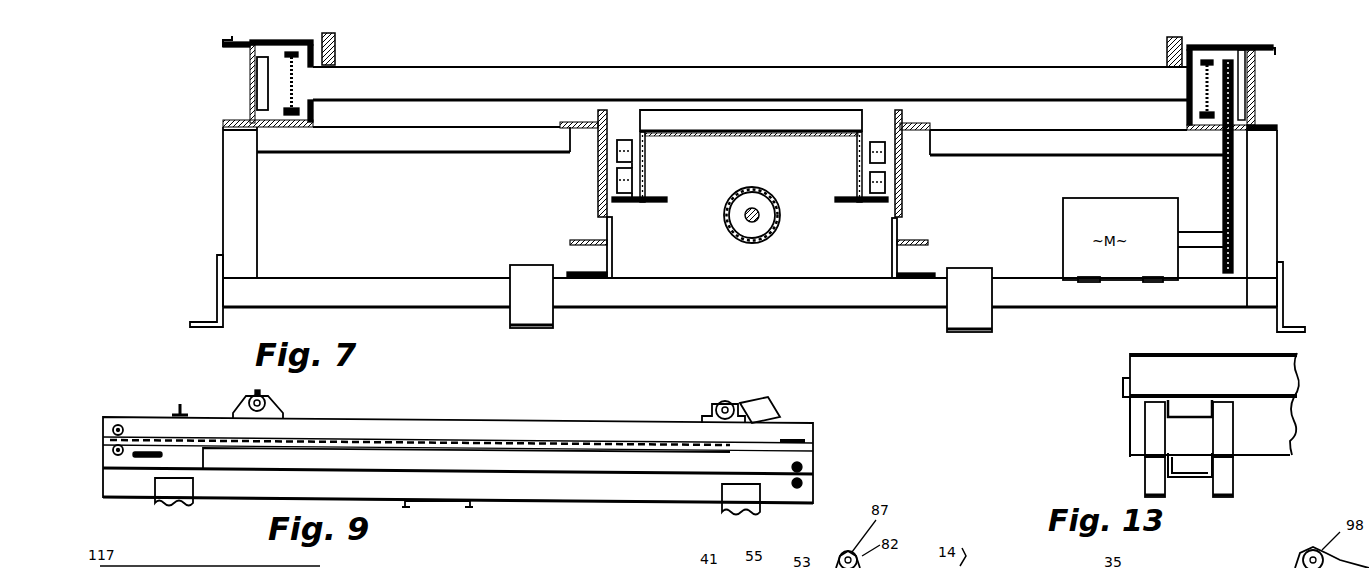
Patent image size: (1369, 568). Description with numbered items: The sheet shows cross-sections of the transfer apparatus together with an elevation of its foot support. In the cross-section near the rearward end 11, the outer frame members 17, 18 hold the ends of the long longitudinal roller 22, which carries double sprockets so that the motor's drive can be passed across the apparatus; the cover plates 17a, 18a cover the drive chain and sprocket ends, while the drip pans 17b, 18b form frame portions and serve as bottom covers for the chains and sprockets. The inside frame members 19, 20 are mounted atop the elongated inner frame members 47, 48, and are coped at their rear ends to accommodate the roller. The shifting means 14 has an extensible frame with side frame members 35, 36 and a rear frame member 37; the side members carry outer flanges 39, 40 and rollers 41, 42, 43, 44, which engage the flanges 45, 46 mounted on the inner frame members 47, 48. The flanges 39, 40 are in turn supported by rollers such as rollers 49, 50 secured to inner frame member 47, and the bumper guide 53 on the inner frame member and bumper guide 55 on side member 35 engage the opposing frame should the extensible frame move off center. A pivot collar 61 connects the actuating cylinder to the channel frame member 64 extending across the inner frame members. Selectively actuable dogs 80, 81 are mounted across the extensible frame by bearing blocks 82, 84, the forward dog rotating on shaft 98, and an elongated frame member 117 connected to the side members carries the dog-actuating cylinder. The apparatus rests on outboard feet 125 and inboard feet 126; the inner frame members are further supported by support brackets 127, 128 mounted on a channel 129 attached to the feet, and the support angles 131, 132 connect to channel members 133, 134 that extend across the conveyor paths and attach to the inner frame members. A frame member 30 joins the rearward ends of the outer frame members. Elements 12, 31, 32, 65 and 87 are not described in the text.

In FIG. 13, the rearward end 11 is at (1137, 354).
In FIG. 9, the carriage 12 is at (820, 420).
In FIG. 7, the shifting means 14 is at (707, 265).
In FIG. 7, the outer frame member 17 is at (250, 96).
In FIG. 13, the outer frame member 17 is at (1214, 375).
In FIG. 7, the cover plate 17a is at (223, 40).
In FIG. 7, the drip pan 17b is at (290, 127).
In FIG. 7, the outer frame member 18 is at (1256, 100).
In FIG. 7, the cover plate 18a is at (1275, 48).
In FIG. 7, the drip pan 18b is at (1200, 132).
In FIG. 7, the inside frame member 19 is at (603, 110).
In FIG. 7, the inside frame member 20 is at (899, 110).
In FIG. 7, the longitudinal roller 22 is at (750, 83).
In FIG. 13, the frame member 30 is at (1122, 389).
In FIG. 7, the left stop post 31 is at (335, 44).
In FIG. 7, the right stop post 32 is at (1167, 47).
In FIG. 7, the side frame member 35 is at (650, 200).
In FIG. 9, the side frame member 35 is at (450, 437).
In FIG. 7, the side frame member 36 is at (840, 137).
In FIG. 7, the rear frame member 37 is at (745, 118).
In FIG. 7, the outer flange 39 is at (630, 204).
In FIG. 9, the outer flange 39 is at (533, 464).
In FIG. 7, the outer flange 40 is at (880, 206).
In FIG. 7, the roller 41 is at (629, 140).
In FIG. 9, the roller 41 is at (136, 407).
In FIG. 7, the roller 42 is at (617, 183).
In FIG. 9, the roller 42 is at (113, 451).
In FIG. 7, the roller 43 is at (876, 142).
In FIG. 7, the roller 44 is at (885, 187).
In FIG. 7, the flange 45 is at (645, 162).
In FIG. 9, the flange 45 is at (494, 443).
In FIG. 7, the flange 46 is at (868, 172).
In FIG. 7, the inner frame member 47 is at (572, 228).
In FIG. 13, the inner frame member 47 is at (1291, 440).
In FIG. 7, the inner frame member 48 is at (900, 228).
In FIG. 9, the inner frame member 48 is at (487, 494).
In FIG. 9, the roller 49 is at (806, 464).
In FIG. 9, the roller 50 is at (812, 485).
In FIG. 9, the bumper guide 53 is at (814, 436).
In FIG. 9, the bumper guide 55 is at (140, 458).
In FIG. 7, the pivot collar 61 is at (770, 236).
In FIG. 9, the channel frame member 64 is at (442, 500).
In FIG. 7, the wheel hub 65 is at (760, 215).
In FIG. 9, the forward dog 80 is at (705, 398).
In FIG. 9, the rear dog 81 is at (262, 387).
In FIG. 9, the bearing block 82 is at (273, 414).
In FIG. 9, the bearing block 84 is at (745, 403).
In FIG. 9, the roller 87 is at (246, 404).
In FIG. 9, the shaft 98 is at (714, 408).
In FIG. 9, the elongated frame member 117 is at (103, 417).
In FIG. 7, the outboard foot 125 is at (212, 312).
In FIG. 13, the outboard foot 125 is at (1145, 487).
In FIG. 7, the inboard foot 126 is at (540, 318).
In FIG. 7, the support bracket 127 is at (613, 266).
In FIG. 7, the support bracket 128 is at (892, 254).
In FIG. 9, the support bracket 128 is at (182, 505).
In FIG. 7, the channel 129 is at (445, 280).
In FIG. 13, the channel 129 is at (1189, 478).
In FIG. 7, the support angle 131 is at (257, 210).
In FIG. 13, the support angle 131 is at (1228, 434).
In FIG. 13, the support angle 132 is at (1150, 436).
In FIG. 7, the channel member 133 is at (452, 150).
In FIG. 13, the channel member 133 is at (1182, 409).
In FIG. 7, the channel member 134 is at (1063, 150).